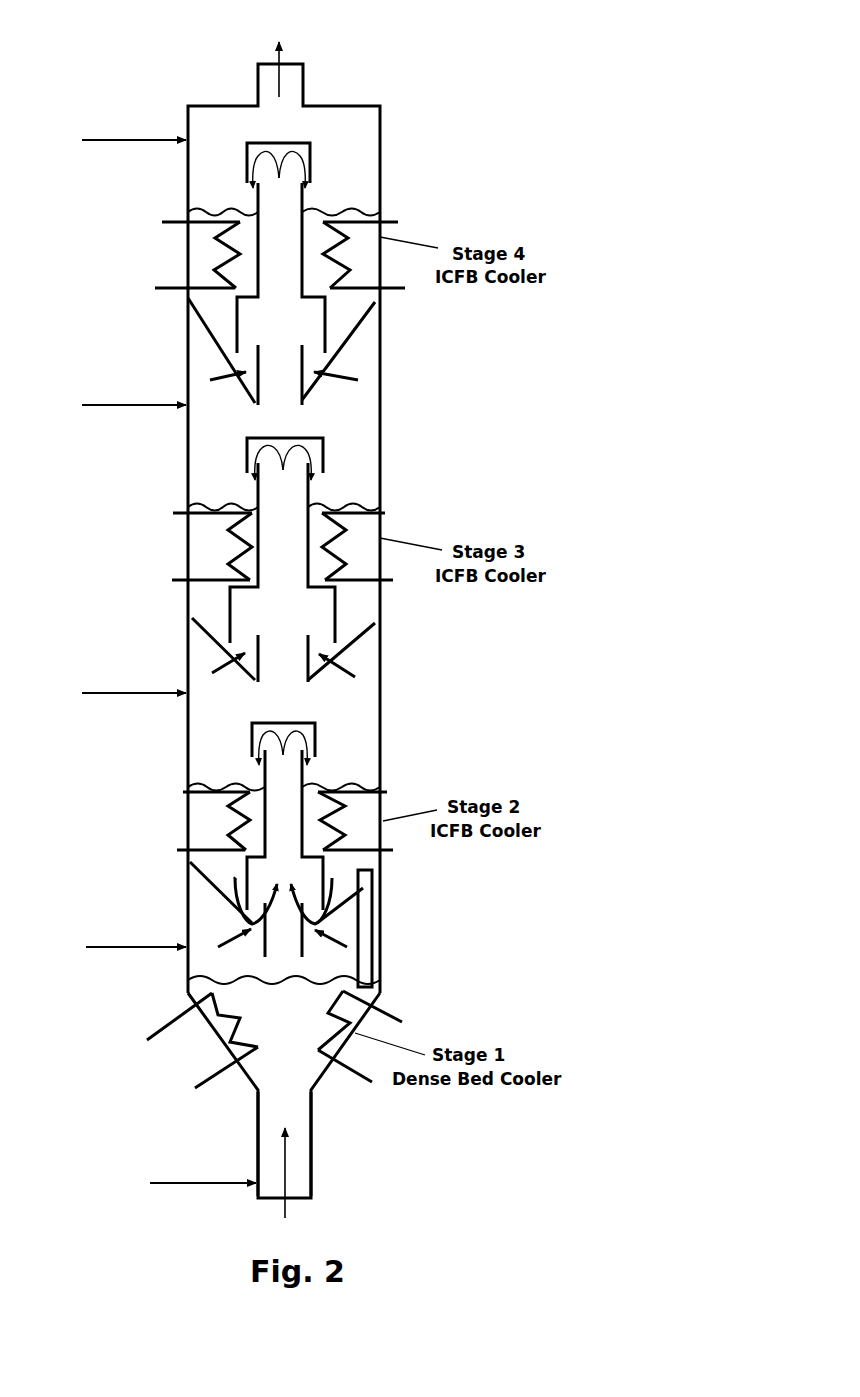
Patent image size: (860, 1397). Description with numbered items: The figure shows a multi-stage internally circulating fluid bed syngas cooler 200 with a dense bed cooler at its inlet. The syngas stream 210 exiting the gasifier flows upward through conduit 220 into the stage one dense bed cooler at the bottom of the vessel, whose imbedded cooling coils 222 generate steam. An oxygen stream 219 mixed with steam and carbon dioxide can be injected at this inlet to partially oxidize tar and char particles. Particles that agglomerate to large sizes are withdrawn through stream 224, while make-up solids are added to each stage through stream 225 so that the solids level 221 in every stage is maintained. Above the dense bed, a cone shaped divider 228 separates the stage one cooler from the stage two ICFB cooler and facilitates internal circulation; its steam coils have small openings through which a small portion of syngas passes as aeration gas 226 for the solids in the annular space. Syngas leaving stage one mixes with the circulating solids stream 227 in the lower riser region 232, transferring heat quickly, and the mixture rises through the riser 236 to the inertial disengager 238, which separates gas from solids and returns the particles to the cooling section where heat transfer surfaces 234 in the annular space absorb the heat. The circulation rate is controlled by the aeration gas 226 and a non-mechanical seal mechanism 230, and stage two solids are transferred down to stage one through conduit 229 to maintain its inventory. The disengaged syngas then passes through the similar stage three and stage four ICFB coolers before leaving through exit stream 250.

The syngas cooler 200 is at (408, 528).
The syngas stream 210 is at (289, 1185).
The oxygen stream 219 is at (184, 1184).
The conduit 220 is at (313, 1143).
The solids level 221 is at (227, 212).
The cooling coils 222 is at (395, 1014).
The withdrawal stream 224 is at (275, 1058).
The make-up solids stream 225 is at (112, 140).
The aeration gas 226 is at (220, 947).
The circulating solids stream 227 is at (237, 905).
The cone shaped divider 228 is at (245, 895).
The conduit 229 is at (372, 928).
The non-mechanical seal mechanism 230 is at (242, 874).
The riser region 232 is at (267, 872).
The heat transfer surfaces 234 is at (353, 786).
The riser 236 is at (303, 804).
The inertial disengager 238 is at (315, 735).
The exit stream 250 is at (281, 57).